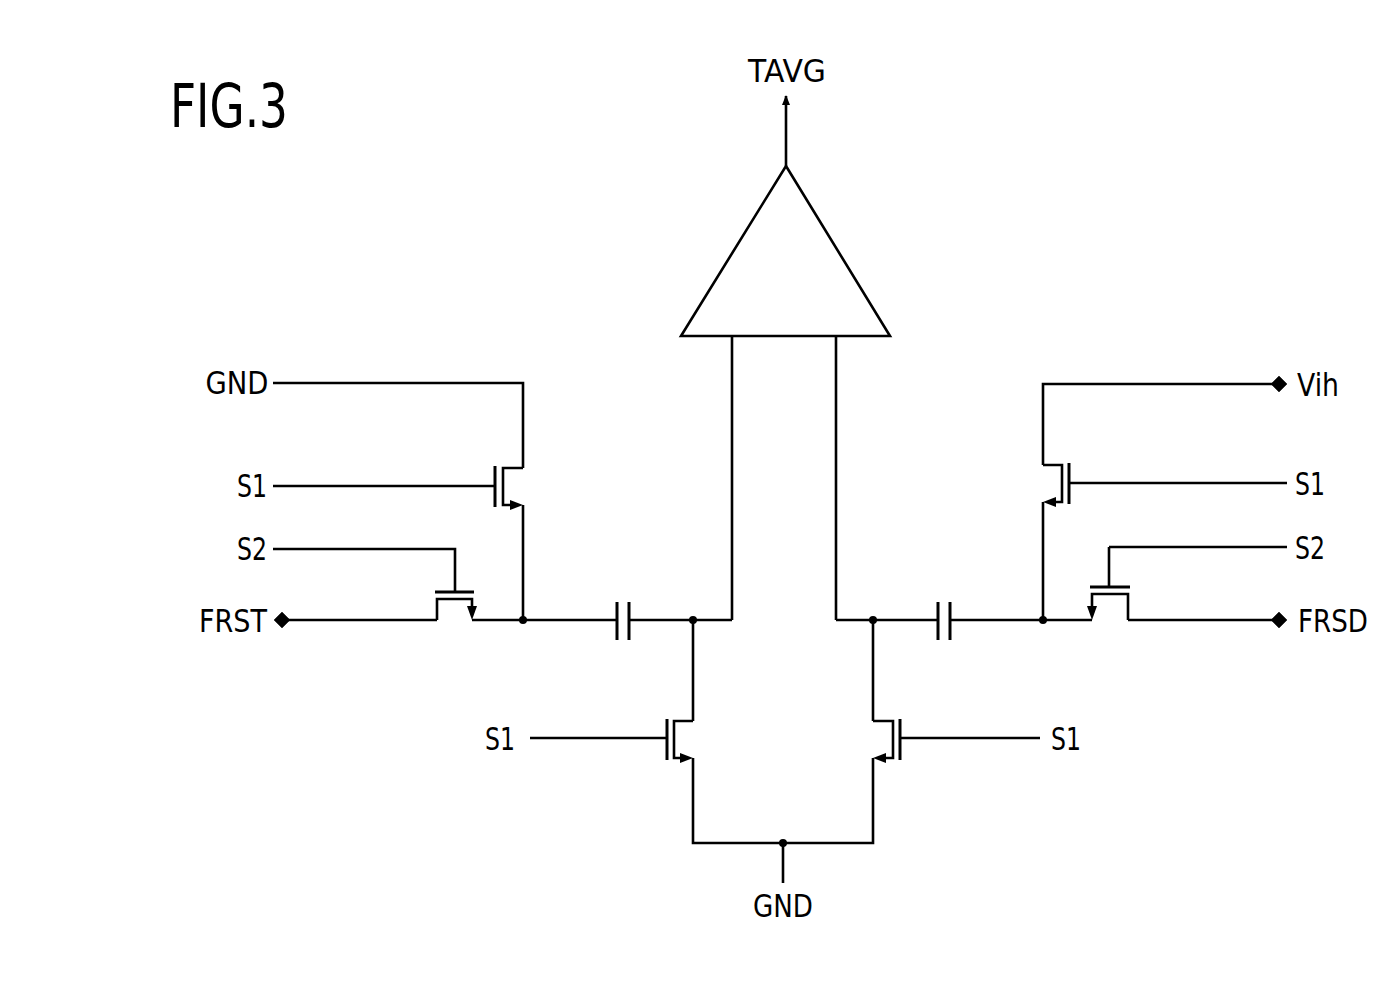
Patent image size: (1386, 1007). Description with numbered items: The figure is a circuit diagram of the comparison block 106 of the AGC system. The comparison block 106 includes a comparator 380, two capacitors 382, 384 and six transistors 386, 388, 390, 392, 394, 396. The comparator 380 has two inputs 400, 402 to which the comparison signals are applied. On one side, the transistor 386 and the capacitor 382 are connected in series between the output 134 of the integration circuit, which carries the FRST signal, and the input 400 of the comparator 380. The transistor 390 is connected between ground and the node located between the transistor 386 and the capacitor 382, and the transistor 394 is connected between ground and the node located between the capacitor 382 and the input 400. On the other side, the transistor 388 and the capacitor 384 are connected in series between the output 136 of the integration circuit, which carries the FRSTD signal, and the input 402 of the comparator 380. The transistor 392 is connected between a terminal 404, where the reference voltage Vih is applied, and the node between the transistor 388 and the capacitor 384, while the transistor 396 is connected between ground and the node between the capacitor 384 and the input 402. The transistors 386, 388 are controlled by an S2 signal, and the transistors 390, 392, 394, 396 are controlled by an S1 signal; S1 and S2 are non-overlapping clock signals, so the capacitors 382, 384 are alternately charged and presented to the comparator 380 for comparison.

The comparison block 106 is at (1184, 156).
The output of the integration circuit 134 is at (283, 628).
The output of the integration circuit 136 is at (1279, 628).
The comparator 380 is at (843, 257).
The capacitor 382 is at (613, 607).
The capacitor 384 is at (953, 607).
The transistor 386 is at (437, 608).
The transistor 388 is at (1128, 600).
The transistor 390 is at (511, 468).
The transistor 392 is at (1052, 465).
The transistor 394 is at (682, 721).
The transistor 396 is at (885, 721).
The input of the comparator 400 is at (732, 413).
The input of the comparator 402 is at (836, 413).
The terminal 404 is at (1281, 372).